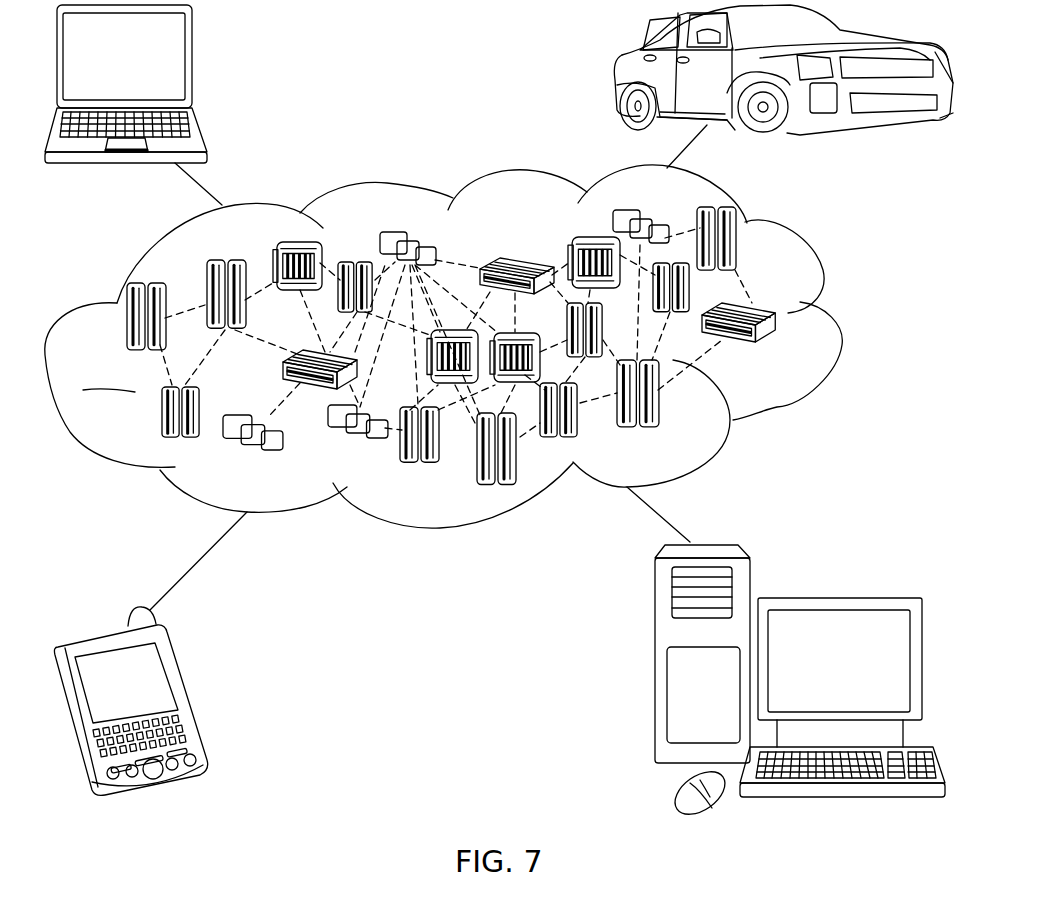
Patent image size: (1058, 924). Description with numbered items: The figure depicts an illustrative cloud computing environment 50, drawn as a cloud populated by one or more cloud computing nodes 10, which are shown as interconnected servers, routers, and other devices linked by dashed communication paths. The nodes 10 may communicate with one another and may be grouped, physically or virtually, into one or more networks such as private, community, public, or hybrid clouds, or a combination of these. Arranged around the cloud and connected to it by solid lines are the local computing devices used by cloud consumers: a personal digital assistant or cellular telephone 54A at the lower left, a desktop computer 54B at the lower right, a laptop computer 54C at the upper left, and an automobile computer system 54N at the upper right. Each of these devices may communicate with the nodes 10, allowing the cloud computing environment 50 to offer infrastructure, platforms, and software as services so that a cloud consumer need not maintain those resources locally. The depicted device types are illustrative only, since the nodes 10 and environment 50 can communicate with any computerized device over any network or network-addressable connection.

The cloud computing node 10 is at (789, 354).
The cloud computing environment 50 is at (835, 320).
The personal digital assistant or cellular telephone 54A is at (187, 697).
The desktop computer 54B is at (837, 597).
The laptop computer 54C is at (193, 62).
The automobile computer system 54N is at (622, 74).